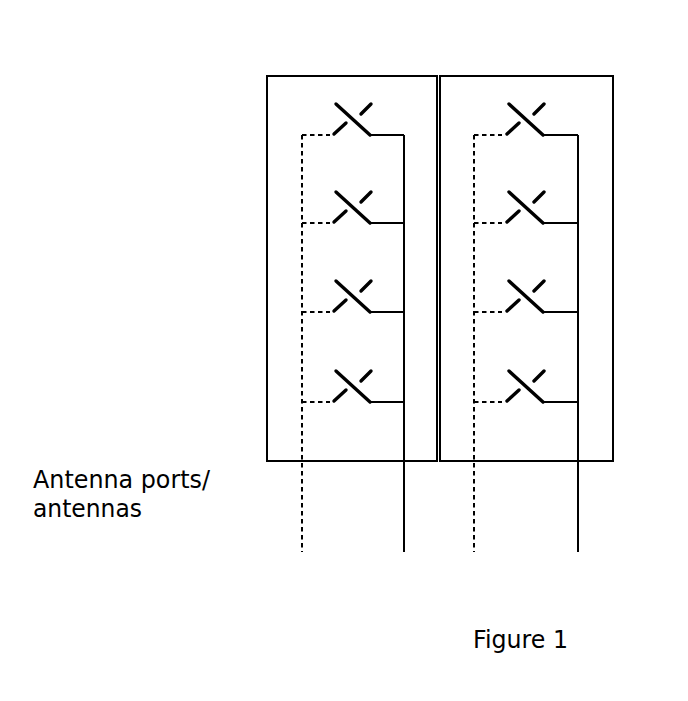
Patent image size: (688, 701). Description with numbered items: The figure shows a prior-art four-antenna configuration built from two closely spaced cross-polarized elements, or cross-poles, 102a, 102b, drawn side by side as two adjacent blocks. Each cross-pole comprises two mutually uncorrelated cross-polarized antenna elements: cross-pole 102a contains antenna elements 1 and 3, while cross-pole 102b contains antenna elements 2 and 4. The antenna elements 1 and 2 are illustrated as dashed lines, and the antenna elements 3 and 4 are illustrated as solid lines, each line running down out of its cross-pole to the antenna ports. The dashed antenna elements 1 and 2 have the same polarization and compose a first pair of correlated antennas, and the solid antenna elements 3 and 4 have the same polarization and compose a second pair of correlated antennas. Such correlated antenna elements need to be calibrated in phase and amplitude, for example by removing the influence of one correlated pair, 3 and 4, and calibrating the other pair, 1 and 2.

The cross-polarized element 102a is at (420, 88).
The cross-polarized element 102b is at (592, 88).
The antenna element 1 is at (289, 343).
The antenna element 2 is at (459, 343).
The antenna element 3 is at (390, 343).
The antenna element 4 is at (565, 343).